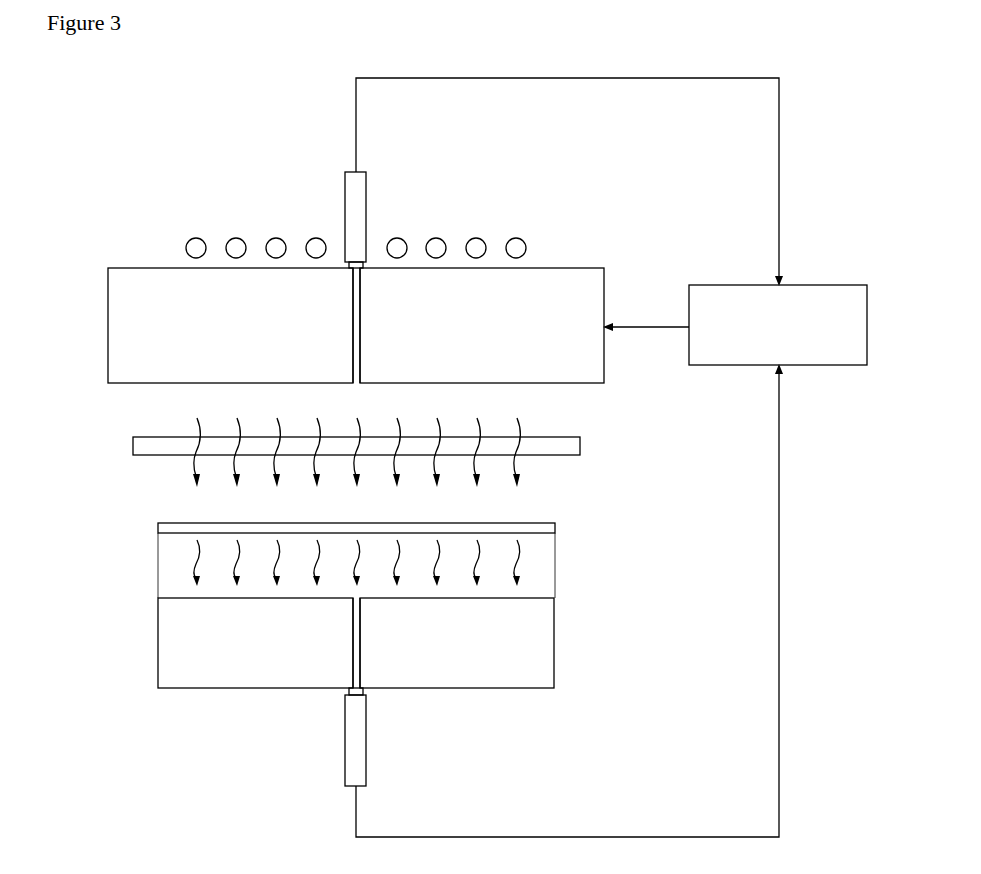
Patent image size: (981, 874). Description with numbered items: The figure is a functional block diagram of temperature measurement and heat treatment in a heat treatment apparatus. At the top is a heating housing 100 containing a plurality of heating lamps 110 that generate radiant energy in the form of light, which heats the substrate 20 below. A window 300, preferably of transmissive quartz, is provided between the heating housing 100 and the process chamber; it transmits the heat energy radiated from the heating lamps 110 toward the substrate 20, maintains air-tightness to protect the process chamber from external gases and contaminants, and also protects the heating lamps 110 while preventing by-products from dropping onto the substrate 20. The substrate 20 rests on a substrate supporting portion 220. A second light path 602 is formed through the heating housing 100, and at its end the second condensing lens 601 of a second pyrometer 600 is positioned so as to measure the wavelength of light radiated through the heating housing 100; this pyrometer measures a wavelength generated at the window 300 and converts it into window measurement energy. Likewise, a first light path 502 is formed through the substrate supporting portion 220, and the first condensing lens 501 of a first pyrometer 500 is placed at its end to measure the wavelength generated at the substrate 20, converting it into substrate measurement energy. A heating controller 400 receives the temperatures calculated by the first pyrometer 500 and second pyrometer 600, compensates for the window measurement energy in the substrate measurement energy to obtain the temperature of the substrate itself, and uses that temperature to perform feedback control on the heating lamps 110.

The substrate 20 is at (158, 527).
The heating housing 100 is at (108, 326).
The heating lamps 110 is at (186, 247).
The substrate supporting portion 220 is at (158, 655).
The window 300 is at (133, 444).
The heating controller 400 is at (808, 285).
The first pyrometer 500 is at (360, 740).
The first condensing lens 501 is at (365, 694).
The first light path 502 is at (362, 655).
The second pyrometer 600 is at (360, 192).
The second condensing lens 601 is at (366, 266).
The second light path 602 is at (360, 353).